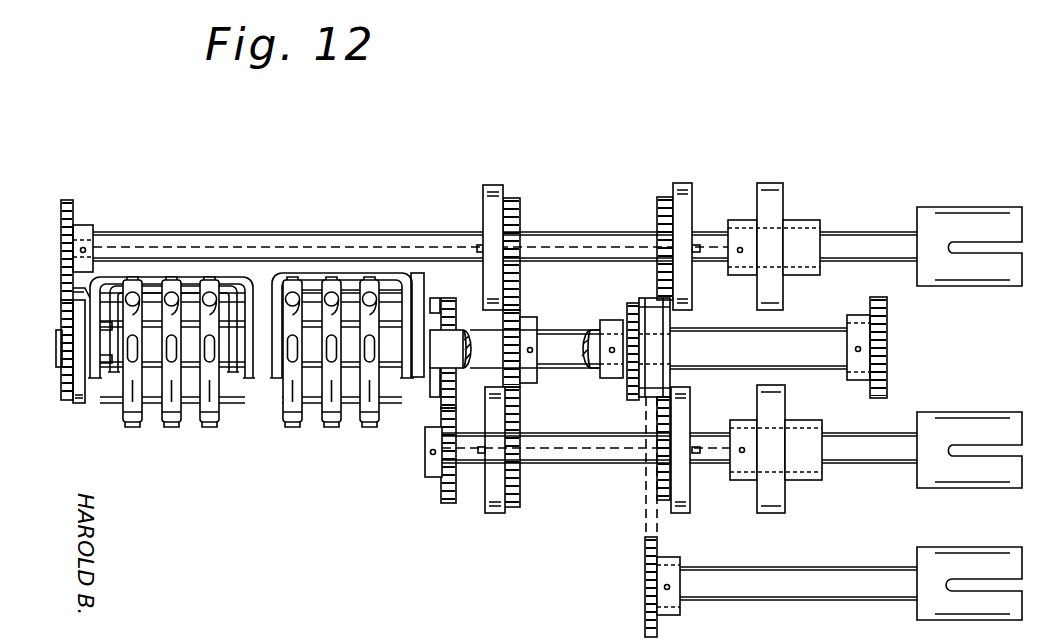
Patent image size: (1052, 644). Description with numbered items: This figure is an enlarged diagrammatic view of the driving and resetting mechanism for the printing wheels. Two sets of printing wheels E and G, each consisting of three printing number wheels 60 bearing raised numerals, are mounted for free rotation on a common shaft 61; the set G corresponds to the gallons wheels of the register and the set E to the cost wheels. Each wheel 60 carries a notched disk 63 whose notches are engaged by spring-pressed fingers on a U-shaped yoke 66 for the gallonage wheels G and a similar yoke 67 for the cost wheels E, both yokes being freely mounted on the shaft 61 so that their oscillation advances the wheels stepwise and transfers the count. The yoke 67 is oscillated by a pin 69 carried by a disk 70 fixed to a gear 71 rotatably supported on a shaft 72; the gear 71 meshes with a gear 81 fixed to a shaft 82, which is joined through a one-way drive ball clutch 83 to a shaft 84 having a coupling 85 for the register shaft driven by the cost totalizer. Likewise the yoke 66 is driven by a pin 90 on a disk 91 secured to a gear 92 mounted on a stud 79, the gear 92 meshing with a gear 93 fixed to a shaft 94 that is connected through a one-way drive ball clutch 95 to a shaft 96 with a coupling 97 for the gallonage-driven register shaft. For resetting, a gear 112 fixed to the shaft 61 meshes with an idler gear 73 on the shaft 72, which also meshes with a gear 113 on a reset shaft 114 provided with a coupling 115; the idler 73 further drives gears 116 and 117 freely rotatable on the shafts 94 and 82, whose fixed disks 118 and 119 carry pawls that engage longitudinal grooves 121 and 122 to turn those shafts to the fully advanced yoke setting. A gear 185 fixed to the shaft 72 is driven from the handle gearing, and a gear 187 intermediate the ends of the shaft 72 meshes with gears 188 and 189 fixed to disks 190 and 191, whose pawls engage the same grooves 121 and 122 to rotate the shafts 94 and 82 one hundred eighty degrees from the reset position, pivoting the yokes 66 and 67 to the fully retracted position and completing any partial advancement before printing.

The printing number wheel 60 is at (204, 427).
The common shaft 61 is at (466, 348).
The notched disk 63 is at (228, 408).
The U-shaped yoke 66 is at (146, 277).
The yoke 67 is at (313, 273).
The pin 69 is at (434, 300).
The disk 70 is at (434, 398).
The gear 71 is at (457, 321).
The shaft 72 is at (809, 329).
The idler gear 73 is at (666, 341).
The stud 79 is at (57, 351).
The gear 81 is at (445, 492).
The shaft 82 is at (608, 464).
The one-way drive ball clutch 83 is at (786, 500).
The shaft 84 is at (880, 464).
The coupling 85 is at (968, 417).
The pin 90 is at (75, 297).
The disk 91 is at (80, 404).
The gear 92 is at (62, 330).
The gear 93 is at (62, 218).
The shaft 94 is at (218, 233).
The one-way drive ball clutch 95 is at (775, 186).
The shaft 96 is at (868, 232).
The coupling 97 is at (959, 206).
The gear 112 is at (627, 321).
The gear 113 is at (645, 623).
The shaft 114 is at (757, 601).
The coupling 115 is at (961, 538).
The gear 116 is at (658, 206).
The gear 117 is at (666, 502).
The disk 118 is at (683, 197).
The disk 119 is at (685, 411).
The longitudinal groove 121 is at (562, 241).
The longitudinal groove 122 is at (571, 463).
The gear 185 is at (888, 346).
The gear 187 is at (518, 326).
The gear 188 is at (508, 204).
The gear 189 is at (516, 509).
The disk 190 is at (484, 206).
The disk 191 is at (490, 515).
The set of printing wheels E is at (337, 428).
The set of printing wheels G is at (172, 428).